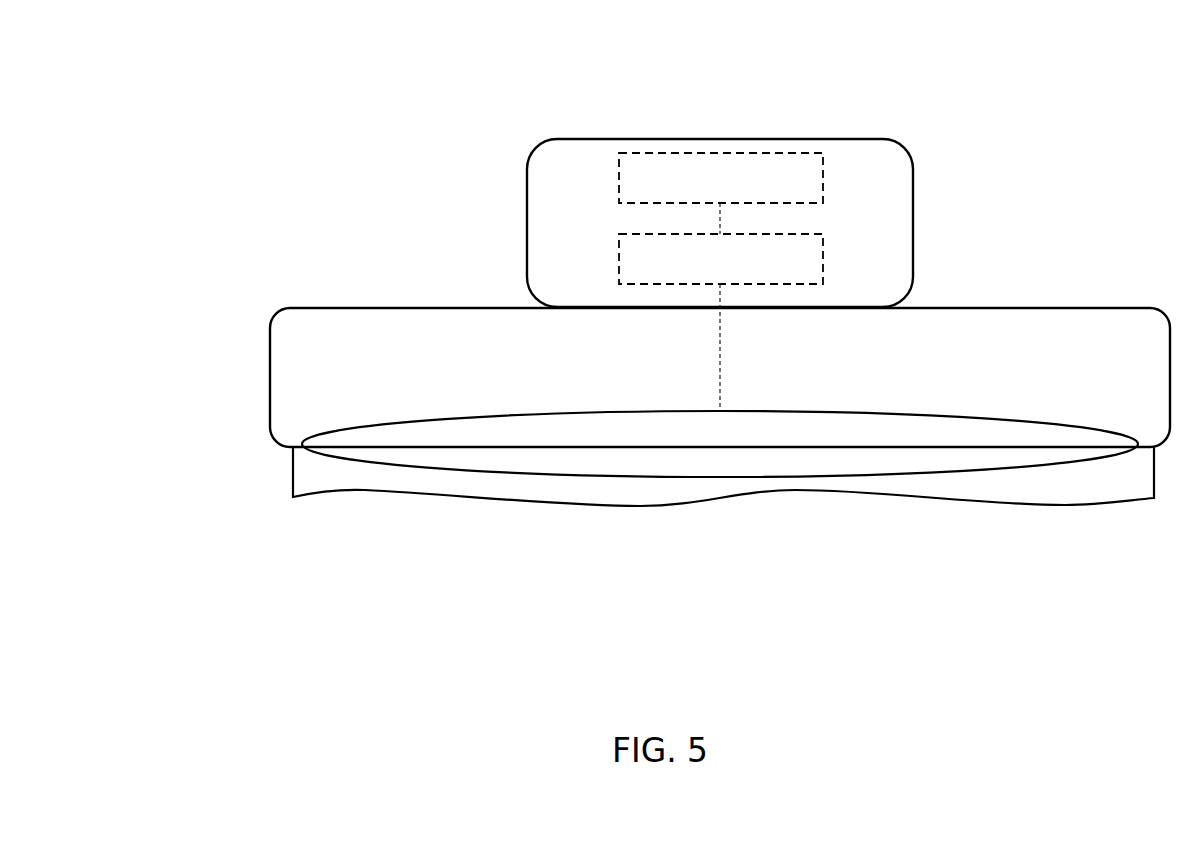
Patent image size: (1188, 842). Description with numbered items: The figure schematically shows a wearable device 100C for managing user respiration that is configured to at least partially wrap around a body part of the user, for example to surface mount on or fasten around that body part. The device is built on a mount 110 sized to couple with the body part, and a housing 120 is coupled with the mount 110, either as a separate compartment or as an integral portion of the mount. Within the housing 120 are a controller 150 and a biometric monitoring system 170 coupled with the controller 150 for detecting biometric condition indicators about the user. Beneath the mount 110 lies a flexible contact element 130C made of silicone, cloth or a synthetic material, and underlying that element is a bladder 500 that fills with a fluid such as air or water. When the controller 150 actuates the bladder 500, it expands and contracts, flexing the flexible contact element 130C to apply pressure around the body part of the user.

The wearable device 100C is at (283, 130).
The mount 110 is at (290, 372).
The housing 120 is at (665, 262).
The biometric monitoring system 170 is at (777, 194).
The controller 150 is at (807, 272).
The bladder 500 is at (742, 461).
The flexible contact element 130C is at (363, 497).